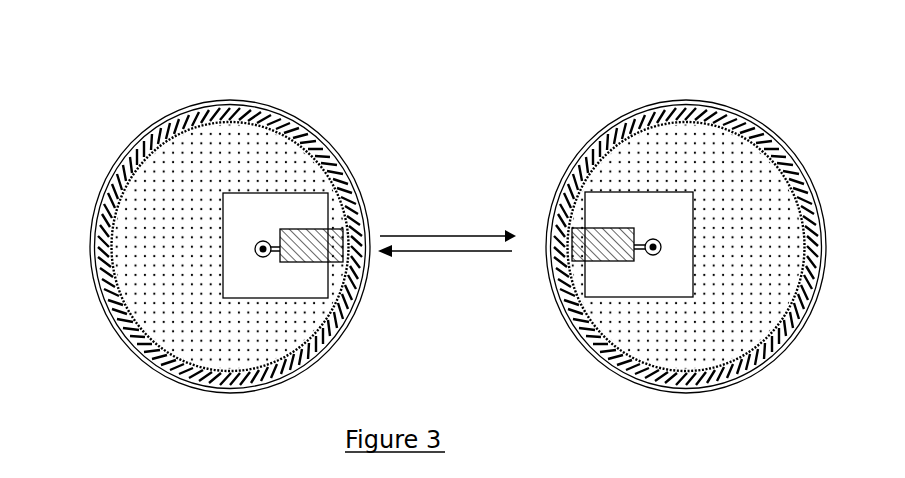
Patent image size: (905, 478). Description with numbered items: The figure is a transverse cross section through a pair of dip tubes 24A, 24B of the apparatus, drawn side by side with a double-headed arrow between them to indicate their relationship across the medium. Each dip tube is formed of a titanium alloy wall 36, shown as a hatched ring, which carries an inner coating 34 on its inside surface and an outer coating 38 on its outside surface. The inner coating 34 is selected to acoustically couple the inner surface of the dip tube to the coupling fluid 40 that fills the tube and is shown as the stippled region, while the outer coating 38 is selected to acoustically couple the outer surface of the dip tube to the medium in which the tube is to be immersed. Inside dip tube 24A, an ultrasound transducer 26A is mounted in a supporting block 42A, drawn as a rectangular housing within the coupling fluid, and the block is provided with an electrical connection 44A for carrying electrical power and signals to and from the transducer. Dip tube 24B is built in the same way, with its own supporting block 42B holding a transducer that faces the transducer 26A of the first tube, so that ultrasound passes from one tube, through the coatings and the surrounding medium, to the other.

The dip tube 24A is at (231, 206).
The dip tube 24B is at (686, 202).
The ultrasound transducer 26A is at (318, 229).
The inner coating 34 is at (127, 162).
The titanium alloy wall 36 is at (100, 247).
The outer coating 38 is at (118, 340).
The coupling fluid 40 is at (172, 263).
The supporting block 42A is at (297, 209).
The supporting block 42B is at (633, 205).
The electrical connection 44A is at (258, 242).